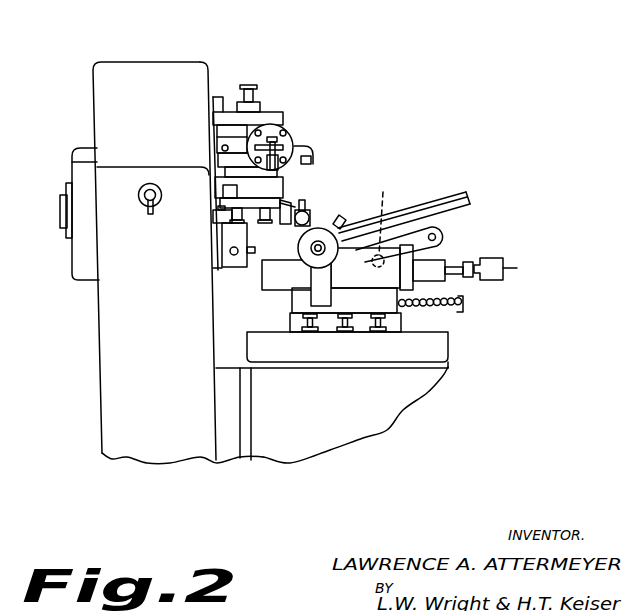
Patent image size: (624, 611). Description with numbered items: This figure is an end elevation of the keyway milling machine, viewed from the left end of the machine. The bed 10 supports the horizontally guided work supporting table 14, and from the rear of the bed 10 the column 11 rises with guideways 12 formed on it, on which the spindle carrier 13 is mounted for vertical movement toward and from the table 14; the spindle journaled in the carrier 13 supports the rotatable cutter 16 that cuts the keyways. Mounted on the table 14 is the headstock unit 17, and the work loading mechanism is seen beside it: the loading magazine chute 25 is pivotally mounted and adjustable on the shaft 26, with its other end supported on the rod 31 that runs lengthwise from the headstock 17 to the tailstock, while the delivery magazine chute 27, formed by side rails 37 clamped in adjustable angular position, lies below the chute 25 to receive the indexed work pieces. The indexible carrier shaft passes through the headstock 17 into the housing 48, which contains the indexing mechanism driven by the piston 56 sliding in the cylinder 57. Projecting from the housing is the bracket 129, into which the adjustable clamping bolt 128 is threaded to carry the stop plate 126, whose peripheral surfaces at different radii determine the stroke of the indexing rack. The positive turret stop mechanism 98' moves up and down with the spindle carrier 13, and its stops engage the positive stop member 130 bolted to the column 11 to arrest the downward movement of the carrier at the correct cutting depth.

The bed 10 is at (393, 405).
The column 11 is at (162, 69).
The guideways 12 is at (220, 100).
The spindle carrier 13 is at (255, 223).
The work supporting table 14 is at (293, 326).
The rotatable cutter 16 is at (303, 204).
The headstock unit 17 is at (368, 314).
The loading magazine chute 25 is at (430, 178).
The shaft 26 is at (380, 217).
The delivery magazine chute 27 is at (461, 293).
The rod 31 is at (438, 238).
The side rails 37 is at (461, 308).
The housing 48 is at (277, 280).
The piston 56 is at (475, 262).
The cylinder 57 is at (505, 268).
The positive turret stop mechanism 98' is at (274, 89).
The stop plate 126 is at (292, 142).
The adjustable clamping bolt 128 is at (283, 126).
The bracket 129 is at (281, 170).
The positive stop member 130 is at (232, 243).